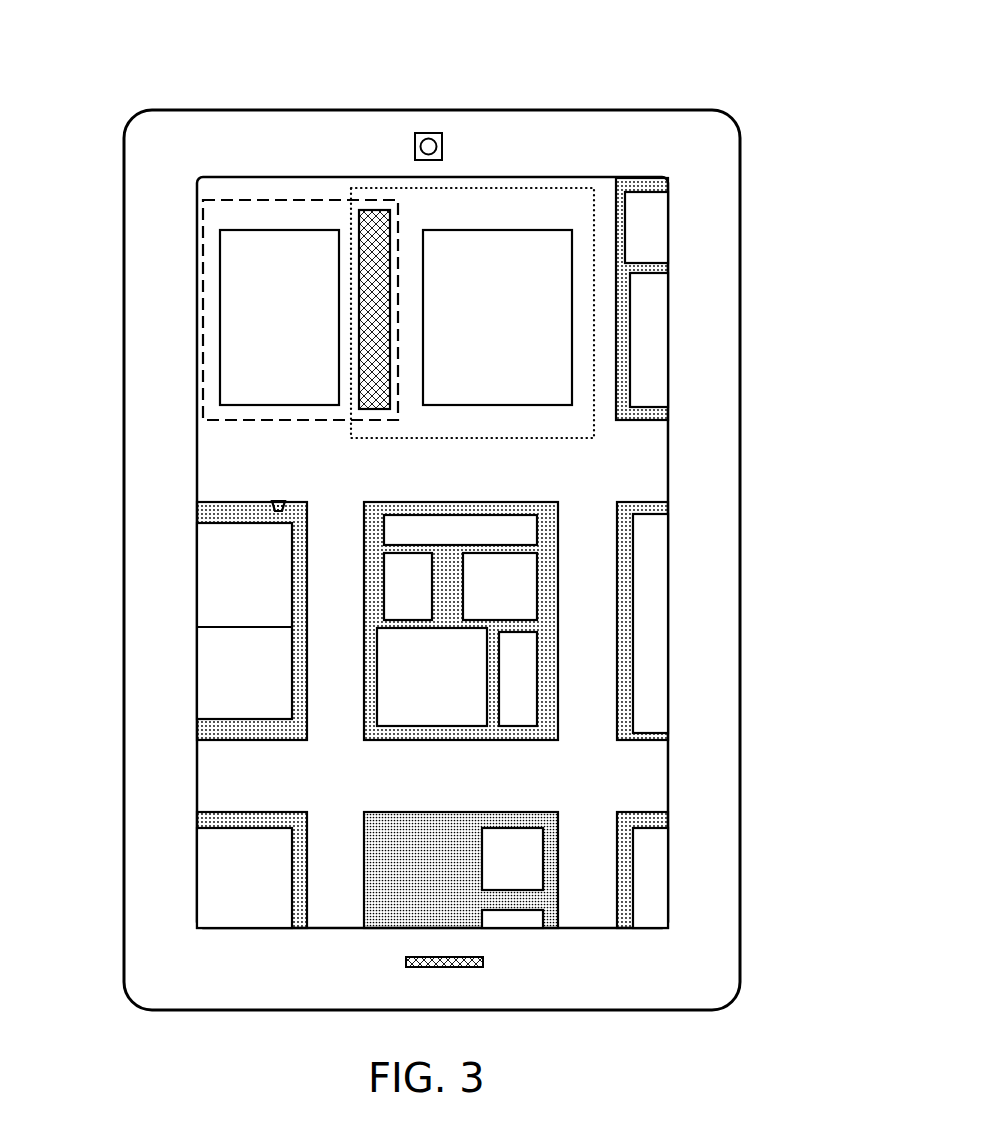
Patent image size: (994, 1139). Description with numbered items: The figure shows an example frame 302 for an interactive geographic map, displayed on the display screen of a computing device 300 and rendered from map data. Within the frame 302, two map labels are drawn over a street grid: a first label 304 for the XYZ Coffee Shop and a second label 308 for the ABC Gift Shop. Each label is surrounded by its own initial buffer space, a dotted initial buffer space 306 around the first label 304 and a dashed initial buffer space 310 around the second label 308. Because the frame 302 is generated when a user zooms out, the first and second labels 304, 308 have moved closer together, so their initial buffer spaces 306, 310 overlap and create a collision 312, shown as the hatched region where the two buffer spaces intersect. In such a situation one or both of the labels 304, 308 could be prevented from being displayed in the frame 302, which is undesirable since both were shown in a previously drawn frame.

The mobile device 300 is at (806, 241).
The frame 302 is at (197, 197).
The first label 304 is at (490, 250).
The initial buffer space 306 is at (580, 213).
The second label 308 is at (318, 283).
The initial buffer space 310 is at (242, 217).
The collision 312 is at (383, 230).